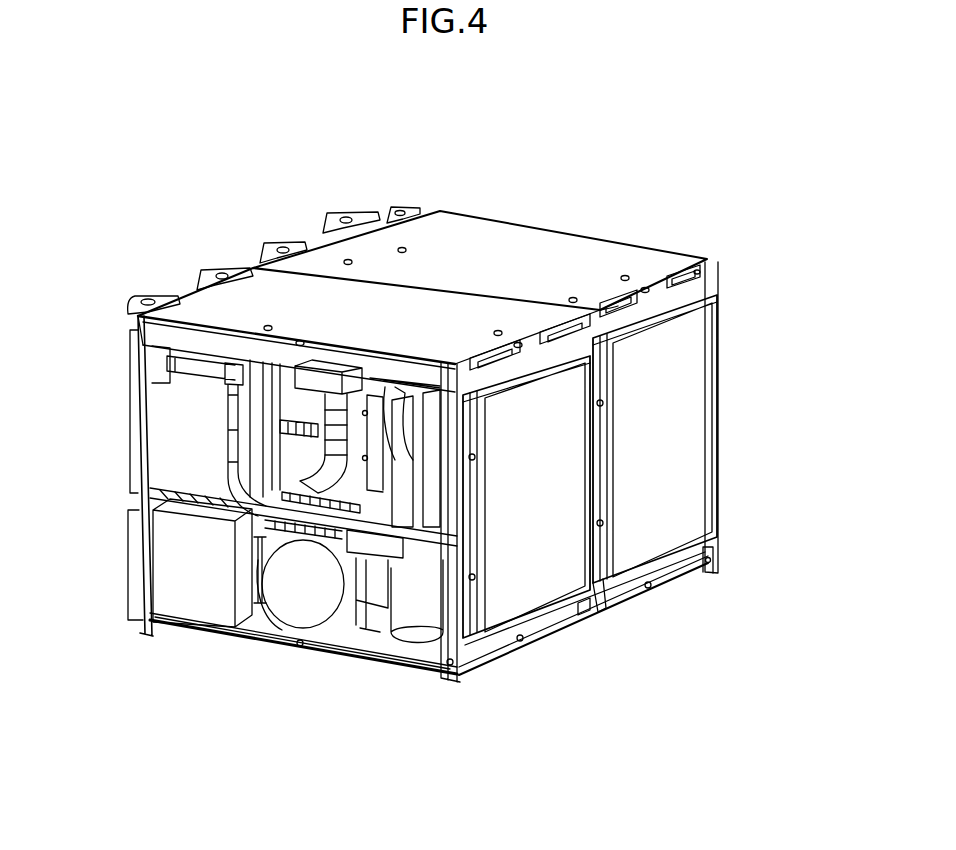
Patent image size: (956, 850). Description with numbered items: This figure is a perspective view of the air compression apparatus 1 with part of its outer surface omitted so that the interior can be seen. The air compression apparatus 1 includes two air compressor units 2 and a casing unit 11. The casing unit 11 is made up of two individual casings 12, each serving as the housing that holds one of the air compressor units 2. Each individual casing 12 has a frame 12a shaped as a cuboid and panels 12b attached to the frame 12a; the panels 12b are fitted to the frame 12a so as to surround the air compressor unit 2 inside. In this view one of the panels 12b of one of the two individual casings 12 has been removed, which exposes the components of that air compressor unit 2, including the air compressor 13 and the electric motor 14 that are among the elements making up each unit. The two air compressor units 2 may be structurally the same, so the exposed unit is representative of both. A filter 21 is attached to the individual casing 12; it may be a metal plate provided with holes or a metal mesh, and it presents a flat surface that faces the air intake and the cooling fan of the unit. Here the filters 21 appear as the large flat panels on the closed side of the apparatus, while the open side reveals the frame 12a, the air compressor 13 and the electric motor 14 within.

The air compression apparatus 1 is at (573, 178).
The air compressor unit 2 is at (360, 630).
The casing unit 11 is at (252, 258).
The individual casing 12 is at (621, 242).
The frame 12a is at (215, 633).
The panel 12b is at (225, 313).
The air compressor 13 is at (257, 525).
The electric motor 14 is at (297, 592).
The filter 21 is at (518, 597).